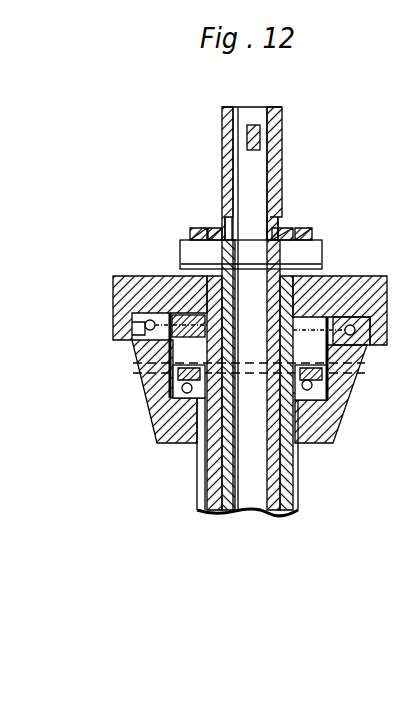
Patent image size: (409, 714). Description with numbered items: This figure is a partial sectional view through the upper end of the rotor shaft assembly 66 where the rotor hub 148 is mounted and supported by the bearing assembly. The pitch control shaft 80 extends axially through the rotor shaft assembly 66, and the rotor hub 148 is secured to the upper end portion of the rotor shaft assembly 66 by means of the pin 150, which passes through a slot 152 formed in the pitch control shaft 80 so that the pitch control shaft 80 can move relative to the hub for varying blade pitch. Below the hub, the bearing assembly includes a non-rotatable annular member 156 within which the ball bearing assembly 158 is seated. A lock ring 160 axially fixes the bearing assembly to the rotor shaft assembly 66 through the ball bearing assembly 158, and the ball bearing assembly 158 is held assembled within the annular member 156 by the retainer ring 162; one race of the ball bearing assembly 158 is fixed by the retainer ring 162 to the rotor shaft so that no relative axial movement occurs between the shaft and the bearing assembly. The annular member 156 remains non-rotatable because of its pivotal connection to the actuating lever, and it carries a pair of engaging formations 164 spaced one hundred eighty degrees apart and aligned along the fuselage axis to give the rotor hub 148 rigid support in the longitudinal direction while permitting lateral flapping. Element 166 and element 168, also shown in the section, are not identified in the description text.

The rotor shaft assembly 66 is at (283, 493).
The pitch control shaft 80 is at (282, 158).
The rotor hub 148 is at (143, 298).
The pin 150 is at (313, 253).
The slot 152 is at (273, 225).
The annular member 156 is at (320, 447).
The ball bearing assembly 158 is at (325, 397).
The lock ring 160 is at (293, 370).
The retainer ring 162 is at (333, 376).
The engaging formations 164 is at (134, 366).
The nut and pin 166 is at (337, 320).
The block 168 is at (257, 135).